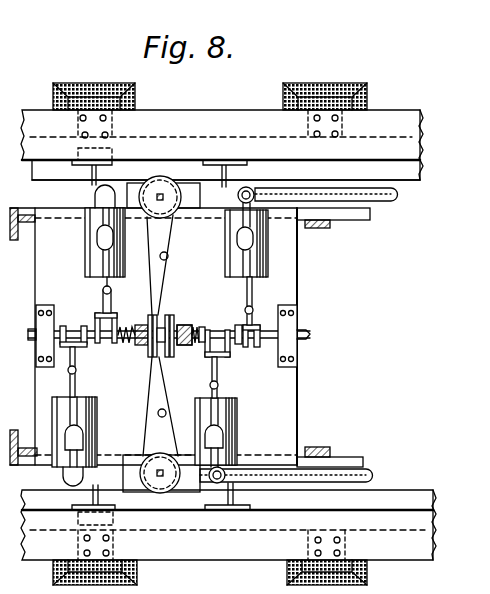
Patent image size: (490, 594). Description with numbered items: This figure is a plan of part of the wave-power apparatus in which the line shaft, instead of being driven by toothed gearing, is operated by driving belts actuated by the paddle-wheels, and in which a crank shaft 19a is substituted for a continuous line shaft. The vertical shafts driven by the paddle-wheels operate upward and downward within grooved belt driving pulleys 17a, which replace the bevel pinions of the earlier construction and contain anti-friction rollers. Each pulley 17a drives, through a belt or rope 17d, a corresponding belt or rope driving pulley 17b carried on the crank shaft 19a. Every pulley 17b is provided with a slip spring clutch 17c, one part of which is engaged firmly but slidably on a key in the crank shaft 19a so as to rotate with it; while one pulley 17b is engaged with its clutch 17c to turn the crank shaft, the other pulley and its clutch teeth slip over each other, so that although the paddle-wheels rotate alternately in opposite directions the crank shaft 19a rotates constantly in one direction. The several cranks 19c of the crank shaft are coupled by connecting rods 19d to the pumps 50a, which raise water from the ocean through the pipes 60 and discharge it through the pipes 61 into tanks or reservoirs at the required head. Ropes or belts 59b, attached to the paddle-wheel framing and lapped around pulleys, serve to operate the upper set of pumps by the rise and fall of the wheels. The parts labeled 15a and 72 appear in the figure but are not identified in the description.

The bearing bracket 15a is at (182, 178).
The belt pulley 17a is at (161, 182).
The belt or rope driving pulley 17b is at (170, 318).
The slip spring clutch 17c is at (142, 326).
The belt or rope 17d is at (168, 270).
The crank shaft 19a is at (30, 334).
The crank 19c is at (78, 345).
The connecting rod 19d is at (104, 292).
The pump 50a is at (100, 262).
The rope or belt 59b is at (169, 257).
The pipe 60 is at (225, 481).
The pipe 61 is at (254, 192).
The spring block 72 is at (193, 330).